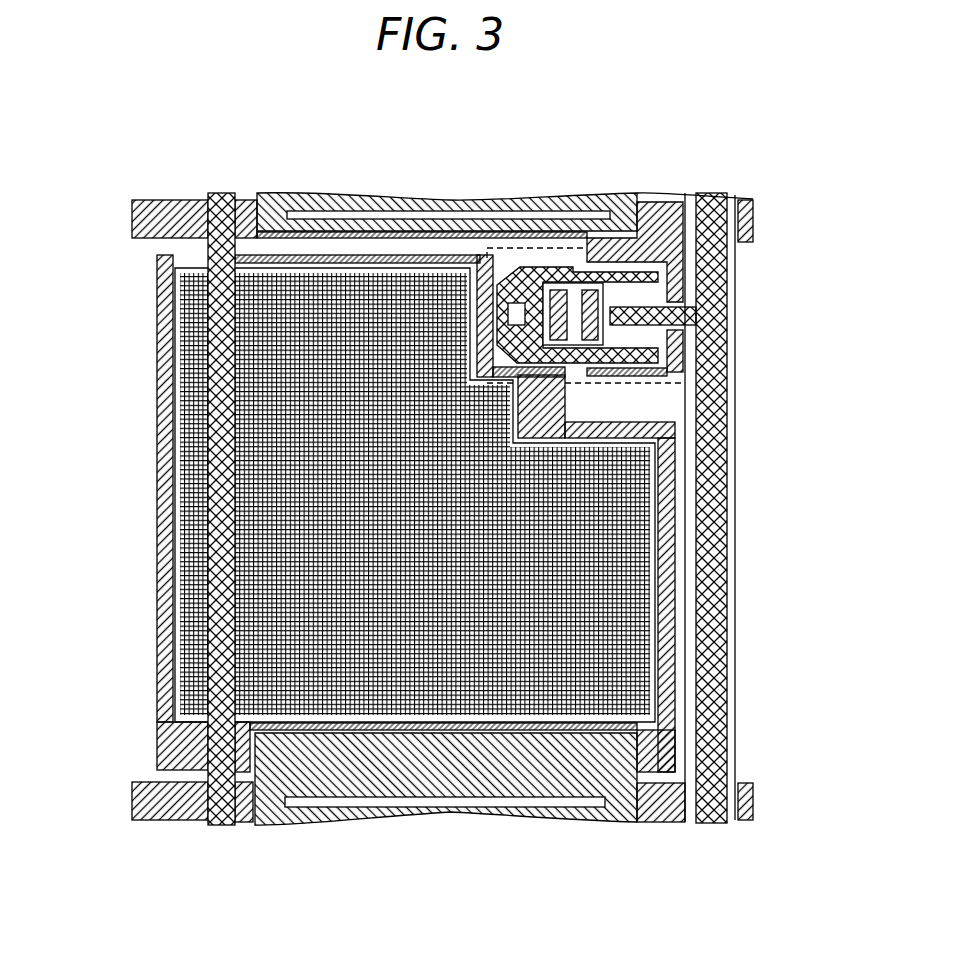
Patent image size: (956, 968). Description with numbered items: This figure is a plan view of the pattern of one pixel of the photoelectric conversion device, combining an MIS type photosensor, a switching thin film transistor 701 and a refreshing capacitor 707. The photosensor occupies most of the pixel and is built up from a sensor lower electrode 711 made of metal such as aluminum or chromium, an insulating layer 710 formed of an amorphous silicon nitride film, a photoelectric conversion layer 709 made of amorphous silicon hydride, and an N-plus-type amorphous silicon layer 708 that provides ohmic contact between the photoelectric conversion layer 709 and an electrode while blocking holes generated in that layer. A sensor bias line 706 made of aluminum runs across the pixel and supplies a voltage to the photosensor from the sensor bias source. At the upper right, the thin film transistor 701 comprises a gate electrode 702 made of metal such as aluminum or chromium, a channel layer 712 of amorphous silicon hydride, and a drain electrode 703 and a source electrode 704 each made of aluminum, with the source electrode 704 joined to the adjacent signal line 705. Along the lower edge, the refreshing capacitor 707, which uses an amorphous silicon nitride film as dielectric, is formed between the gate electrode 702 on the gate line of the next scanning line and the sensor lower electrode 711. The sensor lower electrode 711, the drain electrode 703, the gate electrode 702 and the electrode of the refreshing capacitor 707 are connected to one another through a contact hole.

The thin film transistor 701 is at (502, 248).
The gate electrode 702 is at (168, 208).
The drain electrode 703 is at (560, 268).
The source electrode 704 is at (645, 305).
The signal line 705 is at (733, 473).
The sensor bias line 706 is at (205, 483).
The refreshing capacitor 707 is at (548, 780).
The N+-type amorphous silicon layer 708 is at (431, 695).
The photoelectric conversion layer 709 is at (158, 694).
The insulating layer 710 is at (160, 604).
The sensor lower electrode 711 is at (180, 762).
The channel layer 712 is at (620, 305).